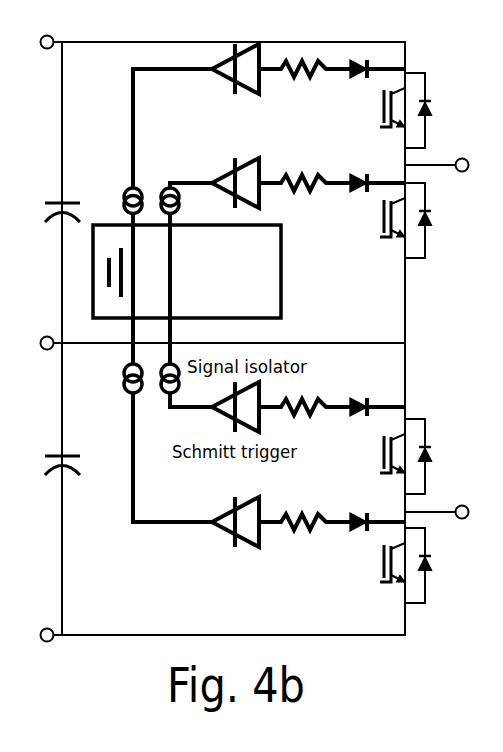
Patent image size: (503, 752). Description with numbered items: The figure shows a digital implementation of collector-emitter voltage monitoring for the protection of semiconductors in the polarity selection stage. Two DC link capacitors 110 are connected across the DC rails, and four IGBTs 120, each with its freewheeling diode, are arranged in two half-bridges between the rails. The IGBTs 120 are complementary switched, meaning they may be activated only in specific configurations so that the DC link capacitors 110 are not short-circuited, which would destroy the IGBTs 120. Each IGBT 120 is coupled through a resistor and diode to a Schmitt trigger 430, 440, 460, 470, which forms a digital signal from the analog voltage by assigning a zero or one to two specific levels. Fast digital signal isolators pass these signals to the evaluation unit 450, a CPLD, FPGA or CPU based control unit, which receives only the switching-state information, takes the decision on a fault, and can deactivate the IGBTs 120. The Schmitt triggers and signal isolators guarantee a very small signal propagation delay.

The DC link capacitor 110 is at (43, 327).
The IGBT 120 is at (427, 338).
The Schmitt trigger 430 is at (269, 116).
The Schmitt trigger 440 is at (287, 179).
The evaluation unit 450 is at (207, 271).
The Schmitt trigger 460 is at (287, 436).
The Schmitt trigger 470 is at (269, 485).